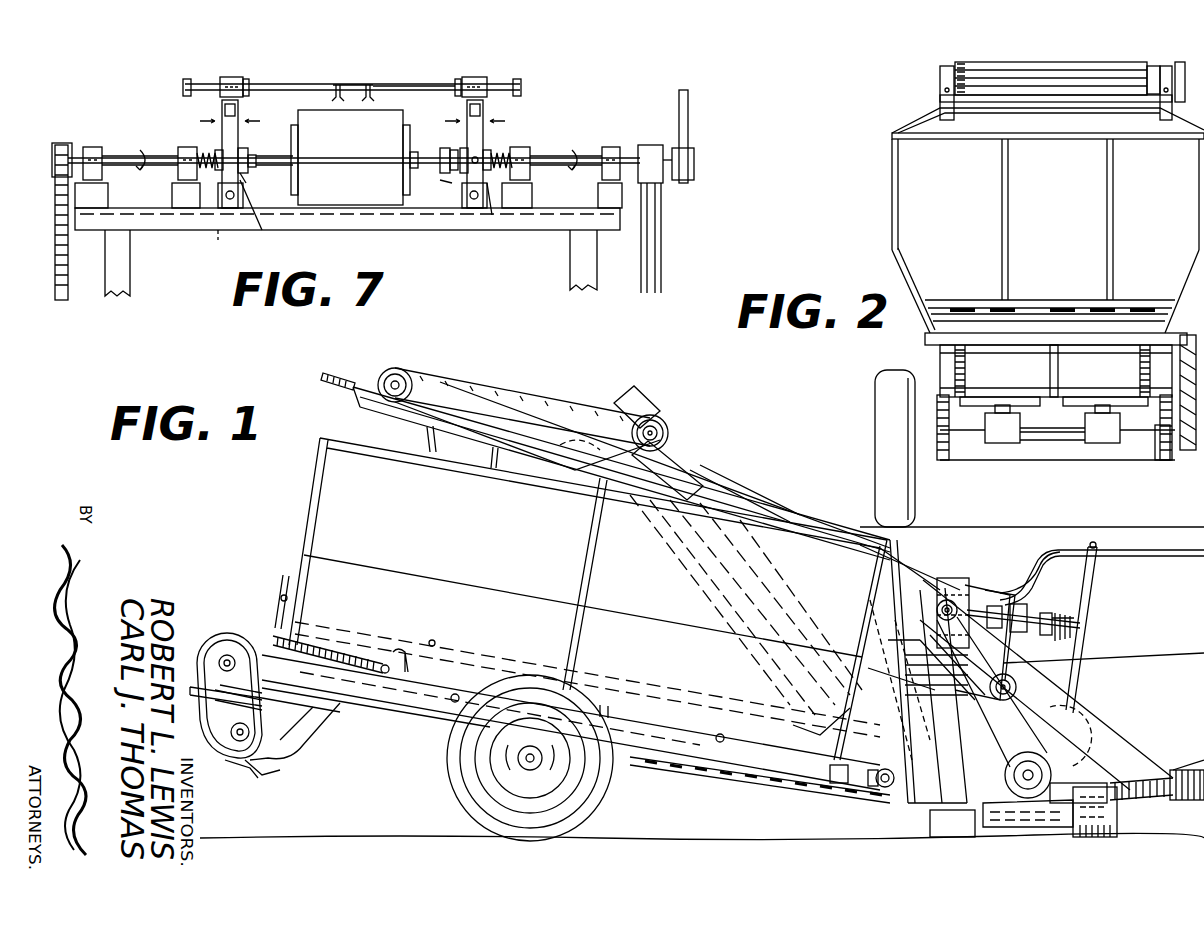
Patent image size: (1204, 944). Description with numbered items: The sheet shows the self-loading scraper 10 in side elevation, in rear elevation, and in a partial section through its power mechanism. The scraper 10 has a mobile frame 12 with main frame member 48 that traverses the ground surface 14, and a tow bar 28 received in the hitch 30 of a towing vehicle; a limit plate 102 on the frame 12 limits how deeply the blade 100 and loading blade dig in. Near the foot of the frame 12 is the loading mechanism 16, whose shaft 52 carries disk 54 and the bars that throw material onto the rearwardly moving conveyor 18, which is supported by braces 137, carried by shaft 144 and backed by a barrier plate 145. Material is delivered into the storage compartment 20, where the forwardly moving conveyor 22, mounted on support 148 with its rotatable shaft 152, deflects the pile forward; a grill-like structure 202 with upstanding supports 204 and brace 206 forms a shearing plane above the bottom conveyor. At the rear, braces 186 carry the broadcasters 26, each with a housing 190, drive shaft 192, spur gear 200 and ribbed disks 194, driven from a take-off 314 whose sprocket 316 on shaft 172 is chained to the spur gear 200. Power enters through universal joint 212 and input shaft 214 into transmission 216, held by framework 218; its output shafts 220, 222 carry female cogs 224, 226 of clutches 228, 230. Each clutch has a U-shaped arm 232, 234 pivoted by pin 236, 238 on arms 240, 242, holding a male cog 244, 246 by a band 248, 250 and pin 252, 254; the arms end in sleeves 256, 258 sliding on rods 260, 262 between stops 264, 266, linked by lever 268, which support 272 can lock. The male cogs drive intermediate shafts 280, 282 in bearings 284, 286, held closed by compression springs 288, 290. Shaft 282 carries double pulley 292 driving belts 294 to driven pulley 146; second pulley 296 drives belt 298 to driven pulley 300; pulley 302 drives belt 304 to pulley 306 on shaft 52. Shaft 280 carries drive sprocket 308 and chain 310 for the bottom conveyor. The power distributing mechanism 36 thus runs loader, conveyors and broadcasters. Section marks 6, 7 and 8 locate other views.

In FIG. 1, the section line 6 is at (216, 584).
In FIG. 1, the mast section 7 is at (910, 559).
In FIG. 1, the conduit 8 is at (1078, 541).
In FIG. 1, the self-loading scraper 10 is at (722, 455).
In FIG. 2, the mobile frame 12 is at (935, 398).
In FIG. 1, the mobile frame 12 is at (428, 706).
In FIG. 1, the ground surface 14 is at (660, 837).
In FIG. 1, the loading mechanism 16 is at (1075, 752).
In FIG. 1, the rearwardly moving conveyor 18 is at (762, 540).
In FIG. 2, the storage compartment 20 is at (925, 240).
In FIG. 1, the storage compartment 20 is at (303, 493).
In FIG. 2, the forwardly moving conveyor 22 is at (1020, 90).
In FIG. 1, the forwardly moving conveyor 22 is at (483, 395).
In FIG. 2, the broadcasters 26 is at (1082, 442).
In FIG. 1, the tow bar 28 is at (1134, 796).
In FIG. 1, the hitch 30 is at (1185, 766).
In FIG. 7, the power distributing mechanism 36 is at (532, 122).
In FIG. 1, the power distributing mechanism 36 is at (965, 575).
In FIG. 1, the main frame member 48 is at (870, 807).
In FIG. 1, the shaft 52 is at (1033, 750).
In FIG. 1, the disk 54 is at (1017, 696).
In FIG. 1, the outwardly diverging blade 100 is at (1117, 822).
In FIG. 1, the limit plate 102 is at (930, 822).
In FIG. 1, the braces 137 is at (616, 404).
In FIG. 1, the shaft 144 is at (664, 430).
In FIG. 1, the barrier plate 145 is at (685, 560).
In FIG. 1, the driven pulley 146 is at (660, 418).
In FIG. 2, the support 148 is at (1043, 105).
In FIG. 1, the support 148 is at (358, 402).
In FIG. 1, the rotatable shaft 152 is at (397, 380).
In FIG. 1, the shaft 172 is at (232, 658).
In FIG. 2, the brace 186 is at (960, 455).
In FIG. 1, the brace 186 is at (258, 765).
In FIG. 2, the housing 190 is at (1004, 438).
In FIG. 2, the drive shaft 192 is at (1180, 452).
In FIG. 1, the drive shaft 192 is at (232, 762).
In FIG. 2, the disks 194 is at (1076, 404).
In FIG. 1, the disks 194 is at (310, 732).
In FIG. 2, the spur gear 200 is at (1195, 455).
In FIG. 1, the spur gear 200 is at (252, 728).
In FIG. 1, the grill-like structure 202 is at (436, 640).
In FIG. 1, the upstanding supports 204 is at (412, 668).
In FIG. 1, the transversely extending brace 206 is at (385, 645).
In FIG. 1, the universal joint 212 is at (1030, 580).
In FIG. 1, the input shaft 214 is at (980, 610).
In FIG. 7, the transmission 216 is at (403, 112).
In FIG. 1, the transmission 216 is at (975, 583).
In FIG. 7, the framework 218 is at (366, 224).
In FIG. 1, the framework 218 is at (920, 658).
In FIG. 7, the output shaft 220 is at (278, 156).
In FIG. 7, the output shaft 222 is at (415, 152).
In FIG. 7, the female cog 224 is at (252, 167).
In FIG. 7, the female cog 226 is at (445, 173).
In FIG. 7, the clutch 228 is at (258, 220).
In FIG. 7, the clutch 230 is at (452, 185).
In FIG. 7, the U-shaped arm 232 is at (240, 118).
In FIG. 7, the U-shaped arm 234 is at (483, 118).
In FIG. 7, the pin 236 is at (232, 208).
In FIG. 7, the pin 238 is at (474, 208).
In FIG. 7, the arm 240 is at (218, 195).
In FIG. 7, the arm 242 is at (490, 200).
In FIG. 7, the male cog 244 is at (246, 183).
In FIG. 7, the male cog 246 is at (452, 172).
In FIG. 7, the band 248 is at (245, 148).
In FIG. 7, the band 250 is at (465, 148).
In FIG. 7, the pin 252 is at (219, 150).
In FIG. 7, the pin 254 is at (487, 150).
In FIG. 7, the sleeve 256 is at (236, 77).
In FIG. 7, the sleeve 258 is at (476, 77).
In FIG. 7, the rod 260 is at (285, 84).
In FIG. 7, the rod 262 is at (410, 84).
In FIG. 7, the stops 264 is at (187, 79).
In FIG. 7, the stops 266 is at (457, 79).
In FIG. 7, the lever 268 is at (352, 84).
In FIG. 1, the support 272 is at (1100, 597).
In FIG. 7, the intermediate shaft 280 is at (126, 156).
In FIG. 7, the intermediate shaft 282 is at (586, 156).
In FIG. 1, the intermediate shaft 282 is at (935, 612).
In FIG. 7, the bearing 284 is at (92, 147).
In FIG. 7, the bearing 286 is at (530, 172).
In FIG. 7, the compression spring 288 is at (202, 150).
In FIG. 7, the compression spring 290 is at (510, 153).
In FIG. 7, the double pulley 292 is at (652, 145).
In FIG. 7, the endless belts 294 is at (656, 205).
In FIG. 1, the endless belts 294 is at (922, 578).
In FIG. 1, the second pulley 296 is at (662, 426).
In FIG. 1, the endless belt 298 is at (570, 420).
In FIG. 1, the driven pulley 300 is at (385, 368).
In FIG. 7, the pulley 302 is at (690, 146).
In FIG. 7, the endless belt 304 is at (688, 104).
In FIG. 1, the endless belt 304 is at (1012, 632).
In FIG. 1, the pulley 306 is at (1068, 757).
In FIG. 7, the drive sprocket 308 is at (62, 143).
In FIG. 7, the endless chain 310 is at (64, 290).
In FIG. 1, the take-off 314 is at (216, 630).
In FIG. 1, the sprocket 316 is at (248, 682).